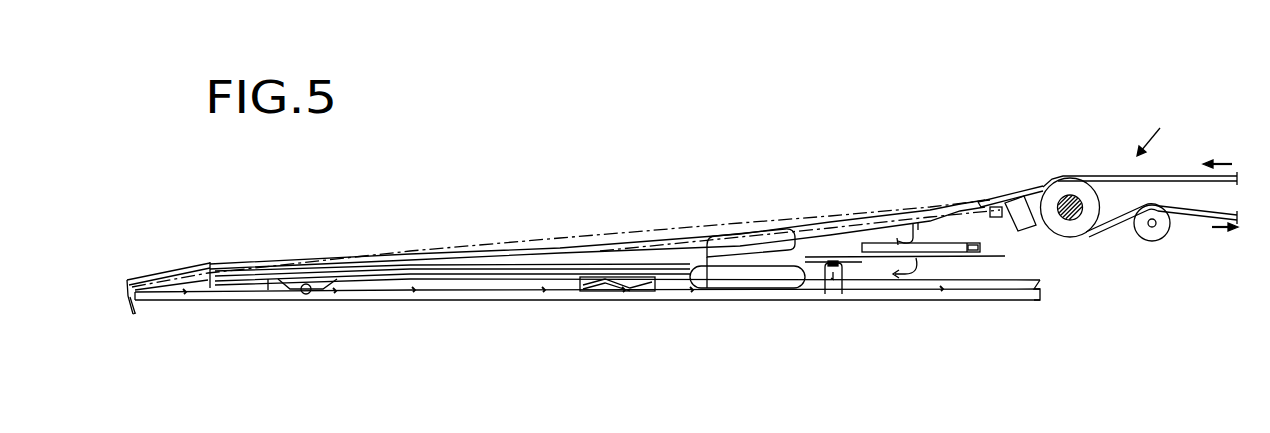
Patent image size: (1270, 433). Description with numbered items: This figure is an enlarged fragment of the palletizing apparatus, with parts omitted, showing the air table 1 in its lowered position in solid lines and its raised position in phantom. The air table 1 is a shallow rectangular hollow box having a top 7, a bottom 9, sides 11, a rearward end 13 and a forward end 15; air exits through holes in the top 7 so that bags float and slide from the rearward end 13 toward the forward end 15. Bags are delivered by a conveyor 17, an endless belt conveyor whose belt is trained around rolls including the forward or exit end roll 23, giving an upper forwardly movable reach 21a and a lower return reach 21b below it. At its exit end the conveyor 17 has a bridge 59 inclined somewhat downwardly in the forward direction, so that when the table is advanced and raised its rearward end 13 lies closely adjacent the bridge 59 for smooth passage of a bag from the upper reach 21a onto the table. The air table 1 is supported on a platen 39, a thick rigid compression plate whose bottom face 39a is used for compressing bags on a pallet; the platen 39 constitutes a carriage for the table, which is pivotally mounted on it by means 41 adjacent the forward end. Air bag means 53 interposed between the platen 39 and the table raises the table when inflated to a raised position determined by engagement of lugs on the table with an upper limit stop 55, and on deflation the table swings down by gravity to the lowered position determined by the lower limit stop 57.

The air table 1 is at (805, 210).
The top 7 is at (891, 209).
The bottom 9 is at (871, 262).
The sides 11 is at (542, 262).
The rearward end 13 is at (983, 223).
The forward end 15 is at (207, 277).
The conveyor 17 is at (1162, 136).
The upper reach 21a is at (1185, 176).
The lower return reach 21b is at (1206, 218).
The forward or exit end roll 23 is at (1087, 228).
The platen 39 is at (472, 292).
The bottom face 39a is at (654, 302).
The pivotal mounting means 41 is at (304, 295).
The air bag means 53 is at (760, 282).
The upper limit stop 55 is at (1028, 229).
The lower limit stop 57 is at (832, 294).
The bridge 59 is at (1014, 194).